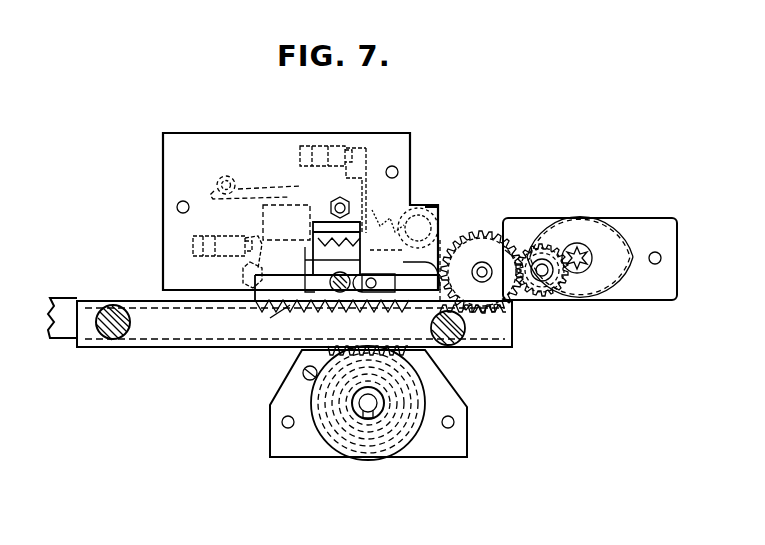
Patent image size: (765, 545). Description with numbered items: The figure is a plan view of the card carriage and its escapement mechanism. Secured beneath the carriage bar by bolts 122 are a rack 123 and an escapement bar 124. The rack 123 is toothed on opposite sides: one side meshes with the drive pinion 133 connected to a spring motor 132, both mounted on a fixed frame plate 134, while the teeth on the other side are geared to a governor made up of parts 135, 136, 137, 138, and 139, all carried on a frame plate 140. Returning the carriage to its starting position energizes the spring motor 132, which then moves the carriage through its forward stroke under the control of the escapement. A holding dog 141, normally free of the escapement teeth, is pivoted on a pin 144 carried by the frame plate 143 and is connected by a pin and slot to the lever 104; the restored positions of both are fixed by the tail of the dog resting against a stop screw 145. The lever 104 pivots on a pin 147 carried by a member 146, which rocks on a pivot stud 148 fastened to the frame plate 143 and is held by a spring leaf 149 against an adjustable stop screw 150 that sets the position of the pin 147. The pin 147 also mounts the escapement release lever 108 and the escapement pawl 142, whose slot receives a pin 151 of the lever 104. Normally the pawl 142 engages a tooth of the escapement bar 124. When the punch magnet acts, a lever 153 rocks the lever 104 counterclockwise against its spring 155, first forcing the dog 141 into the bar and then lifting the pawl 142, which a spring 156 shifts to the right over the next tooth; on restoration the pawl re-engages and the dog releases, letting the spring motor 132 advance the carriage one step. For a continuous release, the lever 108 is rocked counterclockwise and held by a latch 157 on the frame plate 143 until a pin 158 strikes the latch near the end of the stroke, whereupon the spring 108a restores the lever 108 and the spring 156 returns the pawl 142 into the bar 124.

The lever 104 is at (286, 222).
The escapement release lever 108 is at (290, 298).
The spring 108a is at (428, 210).
The bolts 122 is at (113, 306).
The rack 123 is at (140, 346).
The escapement bar 124 is at (60, 340).
The spring motor 132 is at (303, 377).
The drive pinion 133 is at (403, 358).
The fixed frame plate 134 is at (460, 446).
The governor part 135 is at (512, 250).
The governor part 136 is at (546, 298).
The governor part 137 is at (530, 250).
The governor part 138 is at (572, 245).
The governor part 139 is at (604, 307).
The frame plate 140 is at (640, 222).
The holding dog 141 is at (293, 330).
The escapement pawl 142 is at (400, 312).
The frame plate 143 is at (177, 141).
The pin 144 is at (243, 275).
The stop screw 145 is at (192, 243).
The member 146 is at (366, 150).
The pin 147 is at (440, 235).
The pivot stud 148 is at (326, 196).
The spring leaf 149 is at (267, 188).
The adjustable stop screw 150 is at (306, 145).
The pin 151 is at (347, 310).
The lever 153 is at (275, 258).
The spring 155 is at (395, 200).
The spring 156 is at (380, 238).
The latch 157 is at (420, 205).
The pin 158 is at (452, 336).